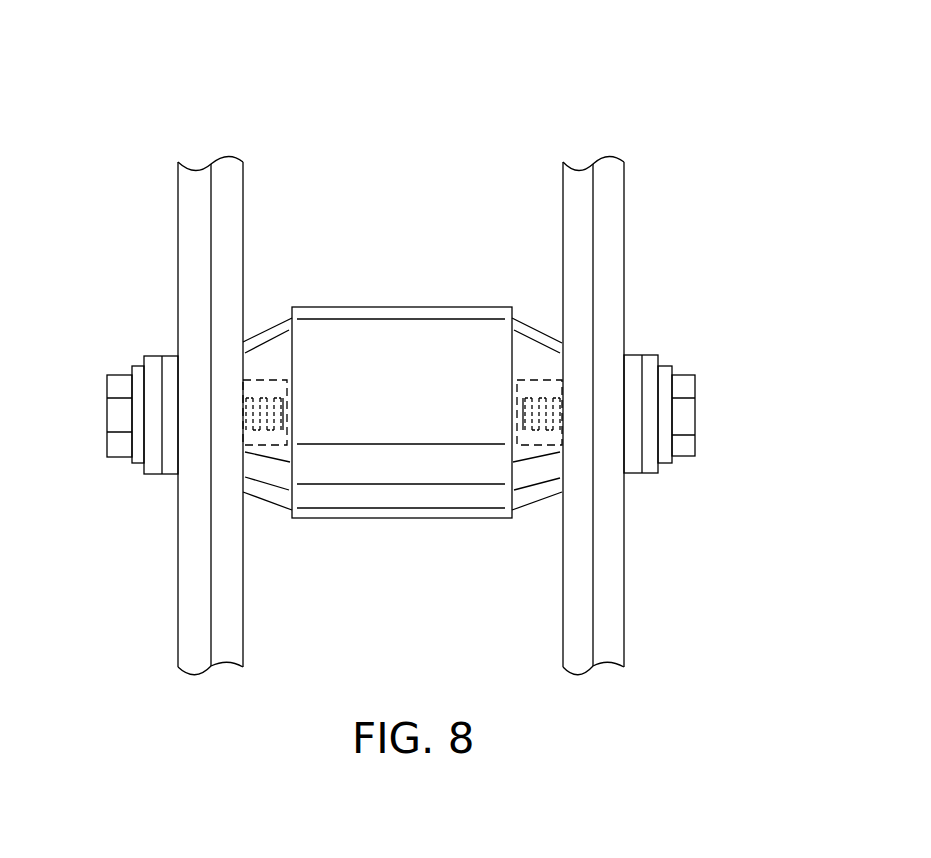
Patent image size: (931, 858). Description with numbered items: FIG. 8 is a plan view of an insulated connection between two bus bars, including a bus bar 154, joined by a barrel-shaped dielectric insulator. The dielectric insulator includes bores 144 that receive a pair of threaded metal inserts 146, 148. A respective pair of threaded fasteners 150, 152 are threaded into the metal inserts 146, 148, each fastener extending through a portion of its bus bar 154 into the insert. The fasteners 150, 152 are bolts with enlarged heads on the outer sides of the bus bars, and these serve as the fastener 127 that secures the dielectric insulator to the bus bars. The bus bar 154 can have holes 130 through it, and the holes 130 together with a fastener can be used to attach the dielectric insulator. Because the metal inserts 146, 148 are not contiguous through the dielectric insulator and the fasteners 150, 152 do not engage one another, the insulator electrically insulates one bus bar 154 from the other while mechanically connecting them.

The bus bar 154 is at (198, 176).
The holes 130 is at (608, 182).
The fastener 127 is at (683, 375).
The threaded fastener 150 is at (258, 400).
The threaded metal insert 146 is at (258, 420).
The bores 144 is at (530, 400).
The threaded fastener 152 is at (525, 445).
The threaded metal insert 148 is at (545, 445).